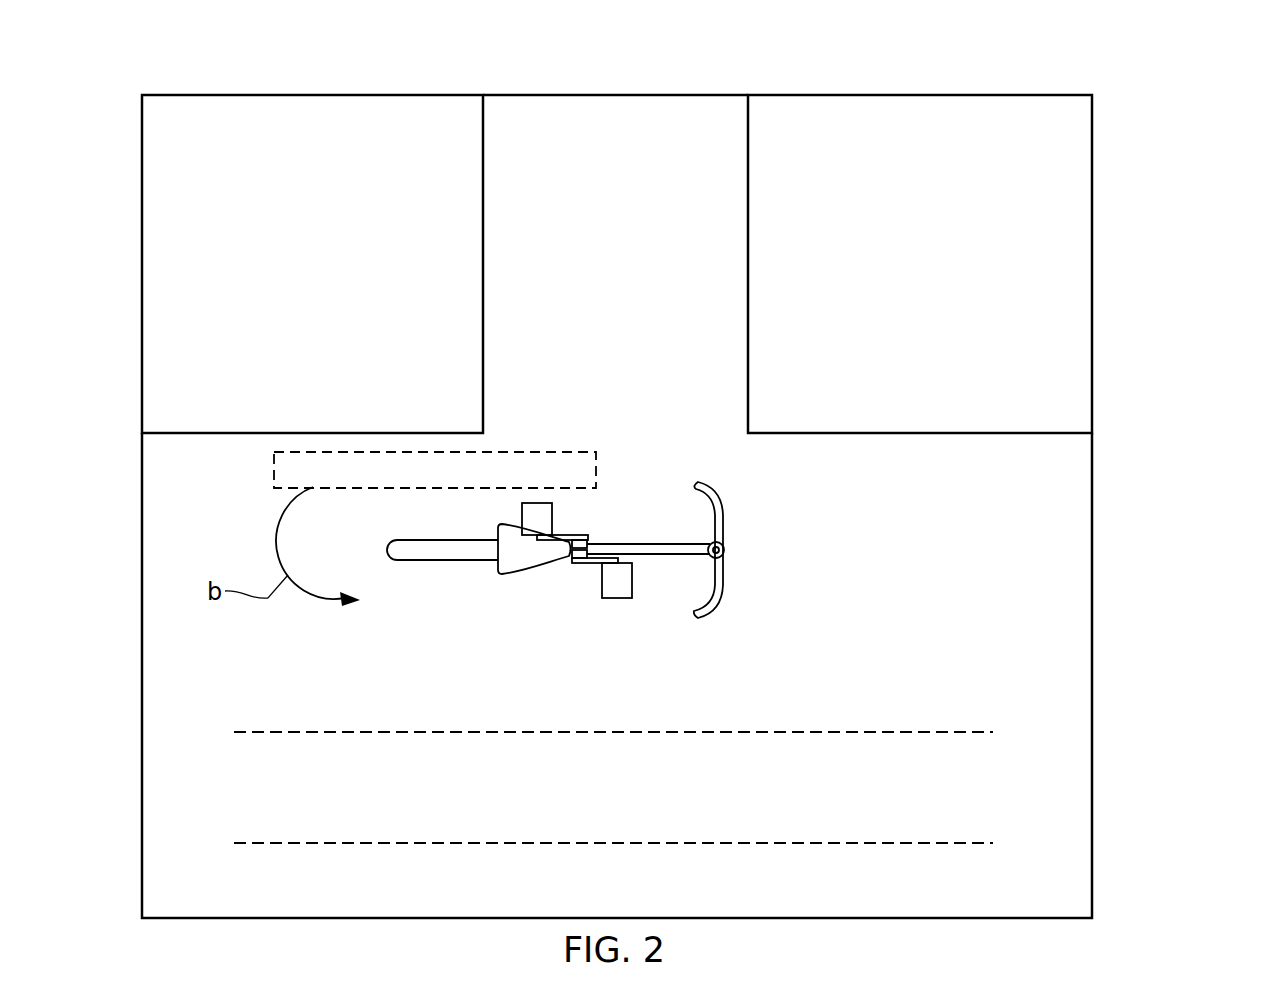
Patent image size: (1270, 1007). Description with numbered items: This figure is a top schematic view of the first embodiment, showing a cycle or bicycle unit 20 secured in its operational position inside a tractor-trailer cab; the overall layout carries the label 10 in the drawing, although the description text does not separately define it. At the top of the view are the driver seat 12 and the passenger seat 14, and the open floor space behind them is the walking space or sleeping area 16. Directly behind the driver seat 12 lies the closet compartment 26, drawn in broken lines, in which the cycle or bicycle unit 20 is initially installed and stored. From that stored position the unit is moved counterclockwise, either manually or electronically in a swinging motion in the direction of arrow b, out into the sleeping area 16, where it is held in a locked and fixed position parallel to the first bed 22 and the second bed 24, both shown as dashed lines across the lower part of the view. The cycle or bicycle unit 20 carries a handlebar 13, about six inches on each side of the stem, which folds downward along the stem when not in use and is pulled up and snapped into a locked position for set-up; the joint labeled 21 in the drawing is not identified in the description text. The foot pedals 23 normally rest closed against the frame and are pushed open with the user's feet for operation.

The work area / system layout 10 is at (1112, 95).
The driver seat 12 is at (318, 295).
The passenger seat 14 is at (934, 295).
The sleeping area 16 is at (926, 681).
The cycle or bicycle unit 20 is at (617, 547).
The pivot joint 21 is at (726, 541).
The handlebar 13 is at (727, 588).
The foot pedals 23 is at (615, 582).
The first bed 22 is at (842, 733).
The second bed 24 is at (878, 845).
The closet compartment 26 is at (451, 483).